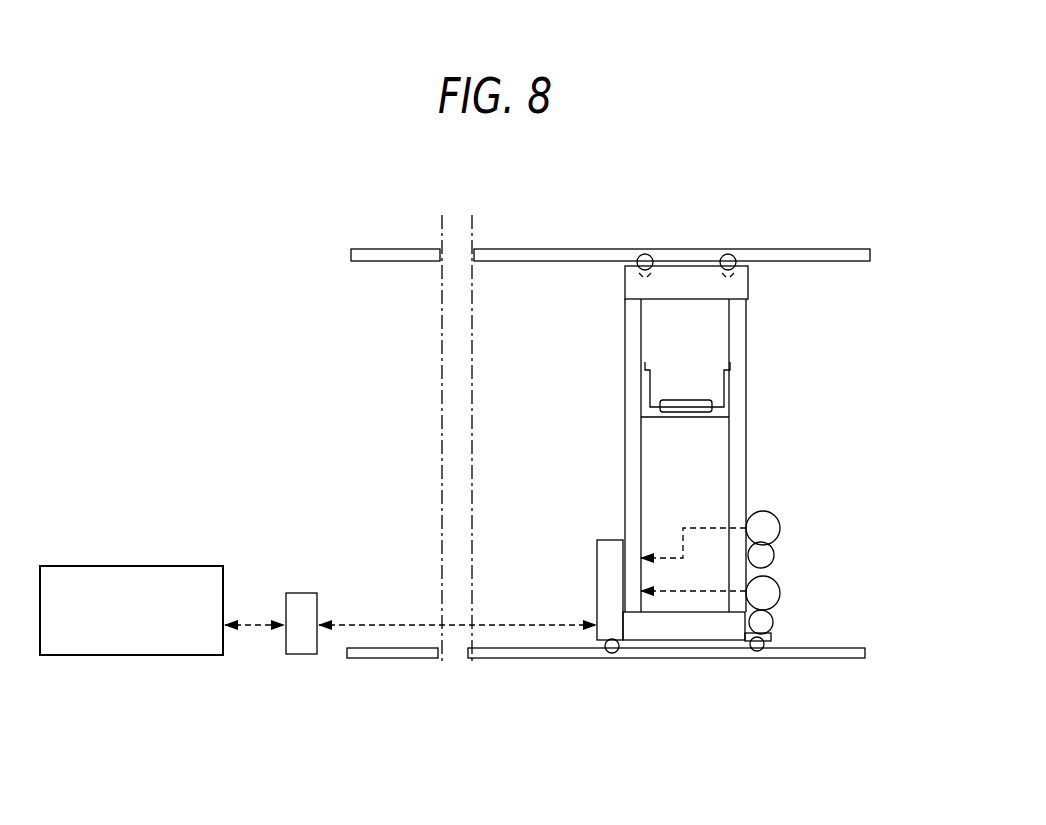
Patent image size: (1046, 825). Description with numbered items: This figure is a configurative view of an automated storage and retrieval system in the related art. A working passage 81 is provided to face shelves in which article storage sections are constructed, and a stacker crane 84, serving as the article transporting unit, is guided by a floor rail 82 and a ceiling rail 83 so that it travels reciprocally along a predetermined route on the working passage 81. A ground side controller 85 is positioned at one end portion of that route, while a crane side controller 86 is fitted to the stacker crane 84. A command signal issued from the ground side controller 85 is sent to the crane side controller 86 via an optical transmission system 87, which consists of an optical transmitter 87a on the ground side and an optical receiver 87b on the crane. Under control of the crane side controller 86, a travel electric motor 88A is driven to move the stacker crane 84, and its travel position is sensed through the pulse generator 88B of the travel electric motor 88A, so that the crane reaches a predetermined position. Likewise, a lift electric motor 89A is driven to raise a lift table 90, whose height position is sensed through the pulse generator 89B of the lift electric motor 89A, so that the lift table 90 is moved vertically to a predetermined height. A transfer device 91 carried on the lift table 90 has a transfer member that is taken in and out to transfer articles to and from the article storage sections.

The working passage 81 is at (503, 292).
The floor rail 82 is at (672, 661).
The ceiling rail 83 is at (556, 262).
The stacker crane 84 is at (586, 460).
The ground side controller 85 is at (128, 563).
The crane side controller 86 is at (598, 539).
The optical transmission system 87 is at (309, 576).
The optical transmitter 87a is at (307, 655).
The optical receiver 87b is at (611, 653).
The travel electric motor 88A is at (773, 622).
The pulse generator of the travel electric motor 88B is at (780, 593).
The lift electric motor 89A is at (774, 555).
The pulse generator of the lift electric motor 89B is at (780, 528).
The lift table 90 is at (688, 418).
The transfer device 91 is at (683, 402).